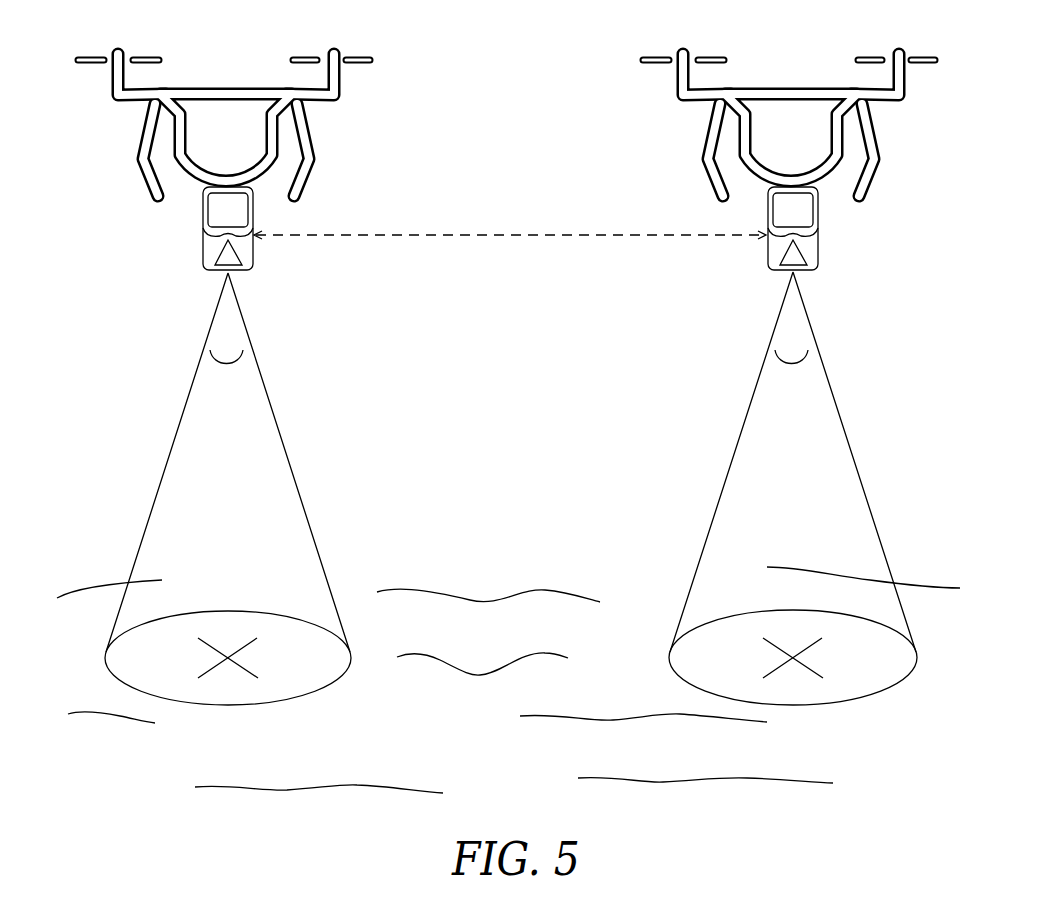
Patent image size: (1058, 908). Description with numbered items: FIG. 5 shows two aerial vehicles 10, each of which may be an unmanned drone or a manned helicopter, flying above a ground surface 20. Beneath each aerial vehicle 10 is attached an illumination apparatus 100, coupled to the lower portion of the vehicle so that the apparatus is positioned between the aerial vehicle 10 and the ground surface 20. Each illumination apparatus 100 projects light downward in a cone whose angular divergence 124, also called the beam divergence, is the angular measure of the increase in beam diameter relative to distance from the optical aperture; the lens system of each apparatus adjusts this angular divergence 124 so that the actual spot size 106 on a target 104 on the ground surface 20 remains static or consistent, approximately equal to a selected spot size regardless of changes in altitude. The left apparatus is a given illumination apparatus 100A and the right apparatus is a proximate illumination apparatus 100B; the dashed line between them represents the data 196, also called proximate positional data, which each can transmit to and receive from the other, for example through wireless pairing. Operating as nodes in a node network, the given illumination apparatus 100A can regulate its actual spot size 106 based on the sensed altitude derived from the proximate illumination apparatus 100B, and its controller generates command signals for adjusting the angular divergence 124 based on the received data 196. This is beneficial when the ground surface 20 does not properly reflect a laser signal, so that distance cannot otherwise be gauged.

The aerial vehicle 10 is at (189, 83).
The ground surface 20 is at (504, 580).
The illumination apparatus 100 is at (510, 228).
The given illumination apparatus 100A is at (197, 231).
The proximate illumination apparatus 100B is at (833, 230).
The target 104 is at (245, 659).
The actual spot size 106 is at (122, 632).
The angular divergence 124 is at (293, 470).
The data 196 is at (487, 234).